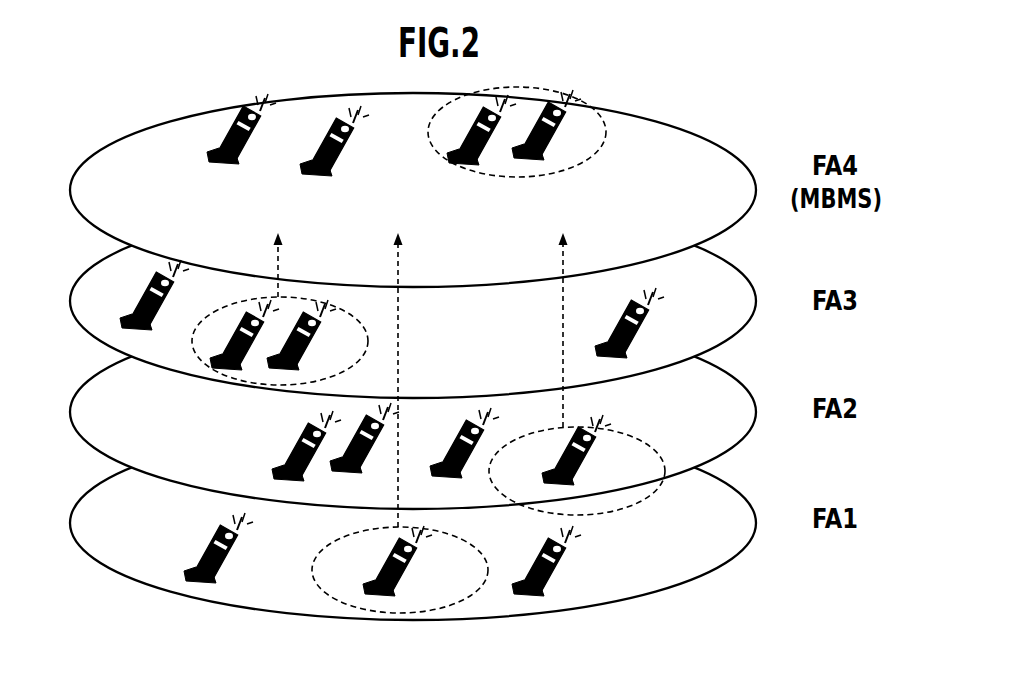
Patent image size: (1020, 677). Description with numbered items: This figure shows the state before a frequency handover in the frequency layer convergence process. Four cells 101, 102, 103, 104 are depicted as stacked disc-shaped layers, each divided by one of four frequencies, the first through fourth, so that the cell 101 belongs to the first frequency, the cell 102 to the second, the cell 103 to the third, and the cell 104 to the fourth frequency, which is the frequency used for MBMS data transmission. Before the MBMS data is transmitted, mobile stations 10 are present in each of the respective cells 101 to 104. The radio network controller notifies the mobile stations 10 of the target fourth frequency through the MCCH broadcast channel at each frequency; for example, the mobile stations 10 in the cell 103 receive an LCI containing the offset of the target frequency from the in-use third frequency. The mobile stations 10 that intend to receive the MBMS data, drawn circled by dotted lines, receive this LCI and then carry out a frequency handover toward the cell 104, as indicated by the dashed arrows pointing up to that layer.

The mobile station 10 is at (208, 160).
The cell 101 is at (728, 483).
The cell 102 is at (728, 372).
The cell 103 is at (728, 261).
The cell 104 is at (728, 150).